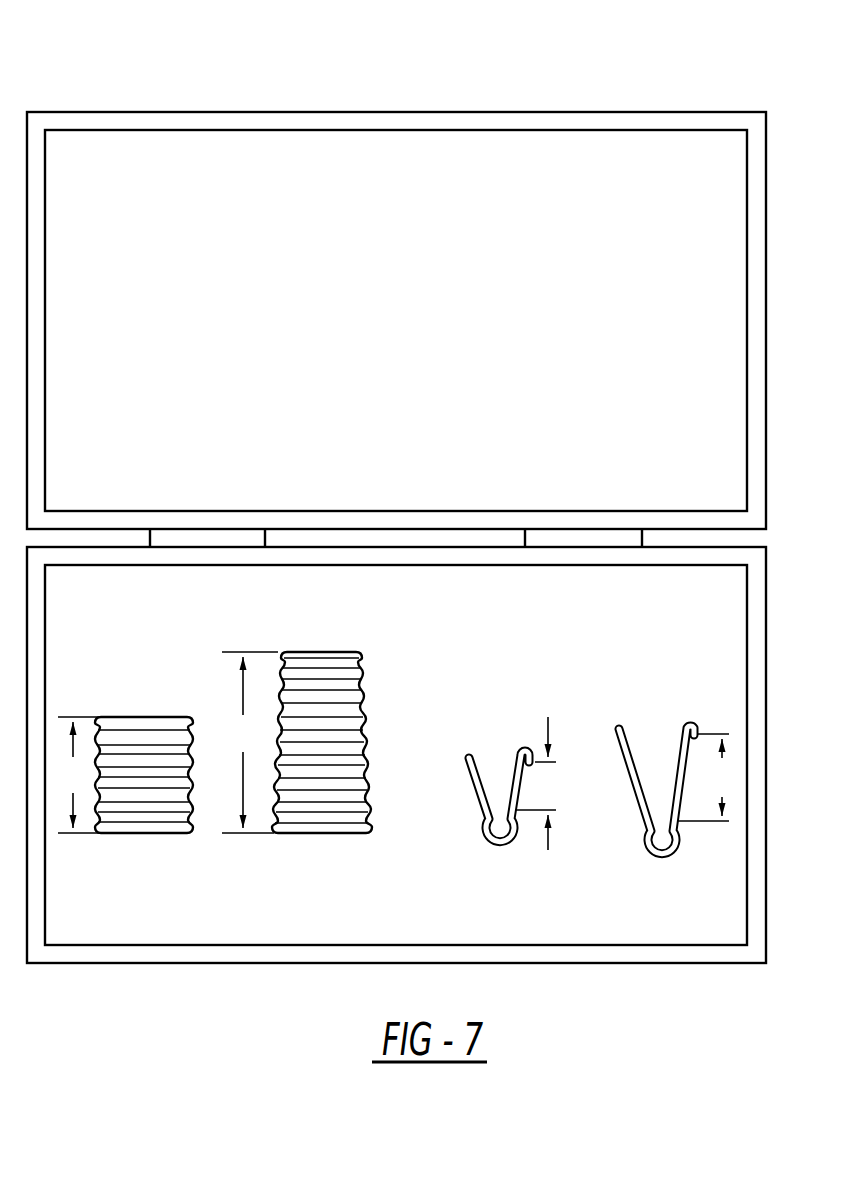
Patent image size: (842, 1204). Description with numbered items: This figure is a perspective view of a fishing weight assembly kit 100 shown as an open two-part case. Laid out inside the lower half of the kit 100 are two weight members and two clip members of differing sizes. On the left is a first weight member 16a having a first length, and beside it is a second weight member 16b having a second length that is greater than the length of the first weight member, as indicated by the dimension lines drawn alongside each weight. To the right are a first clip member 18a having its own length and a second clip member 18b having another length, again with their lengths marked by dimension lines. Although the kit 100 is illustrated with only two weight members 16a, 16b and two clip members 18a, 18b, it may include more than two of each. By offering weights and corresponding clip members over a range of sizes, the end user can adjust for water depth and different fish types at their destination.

The fishing weight assembly kit 100 is at (237, 88).
The first weight member 16a is at (134, 698).
The second weight member 16b is at (380, 688).
The first clip member 18a is at (462, 809).
The second clip member 18b is at (622, 717).